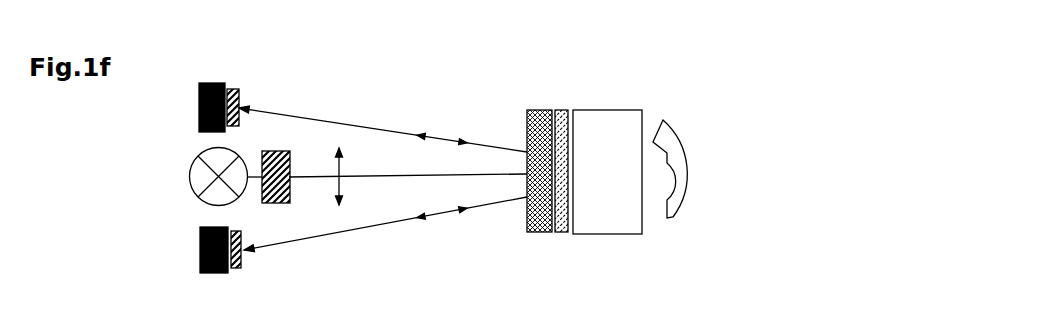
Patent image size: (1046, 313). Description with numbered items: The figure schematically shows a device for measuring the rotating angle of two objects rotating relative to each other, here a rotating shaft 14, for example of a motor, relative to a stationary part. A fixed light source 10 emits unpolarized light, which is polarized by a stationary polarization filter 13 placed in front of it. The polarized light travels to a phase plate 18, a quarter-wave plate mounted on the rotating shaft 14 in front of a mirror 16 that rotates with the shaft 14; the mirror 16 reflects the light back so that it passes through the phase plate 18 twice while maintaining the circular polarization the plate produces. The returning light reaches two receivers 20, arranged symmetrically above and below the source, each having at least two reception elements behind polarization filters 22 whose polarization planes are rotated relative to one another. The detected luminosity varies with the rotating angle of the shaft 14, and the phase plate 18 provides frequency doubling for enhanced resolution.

The light source 10 is at (203, 182).
The stationary polarization filter 13 is at (267, 200).
The shaft 14 is at (618, 133).
The mirror 16 is at (565, 110).
The phase plate 18 is at (535, 112).
The receiver 20 is at (199, 84).
The polarization filter 22 is at (239, 91).